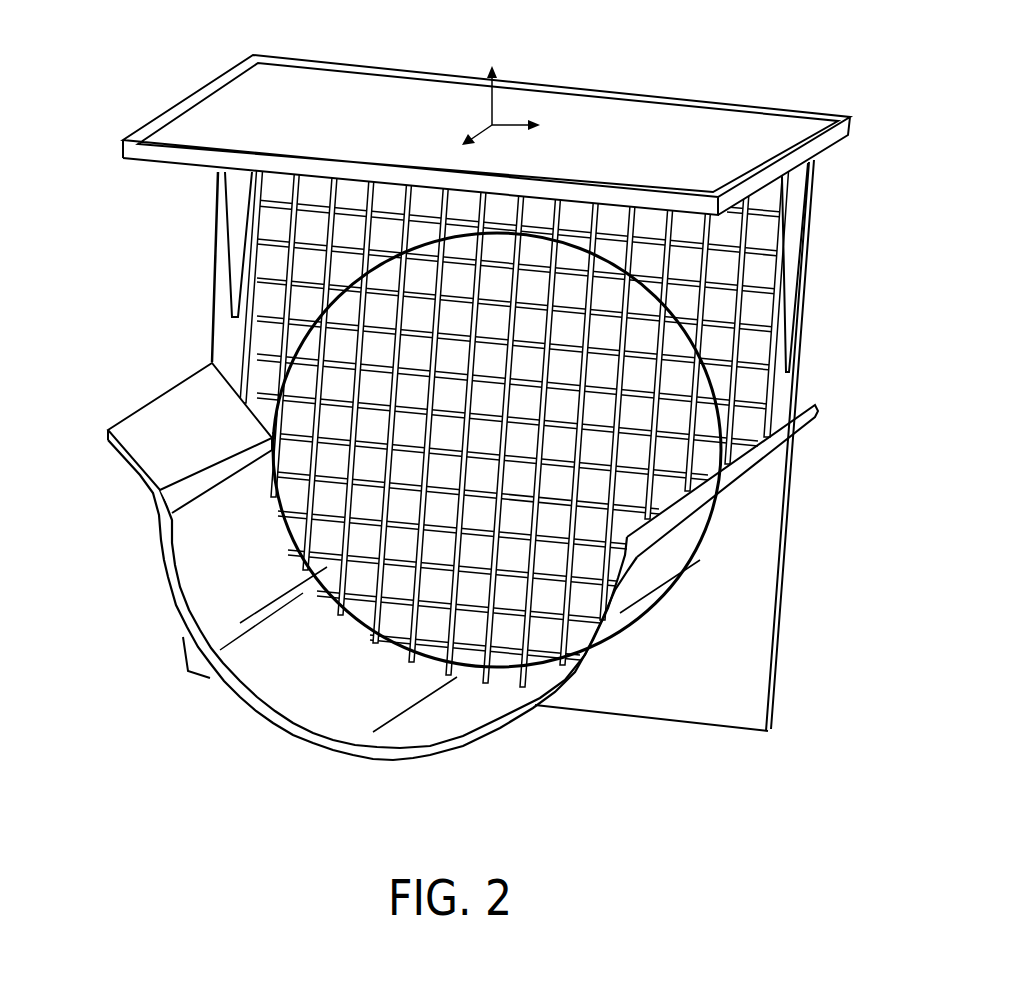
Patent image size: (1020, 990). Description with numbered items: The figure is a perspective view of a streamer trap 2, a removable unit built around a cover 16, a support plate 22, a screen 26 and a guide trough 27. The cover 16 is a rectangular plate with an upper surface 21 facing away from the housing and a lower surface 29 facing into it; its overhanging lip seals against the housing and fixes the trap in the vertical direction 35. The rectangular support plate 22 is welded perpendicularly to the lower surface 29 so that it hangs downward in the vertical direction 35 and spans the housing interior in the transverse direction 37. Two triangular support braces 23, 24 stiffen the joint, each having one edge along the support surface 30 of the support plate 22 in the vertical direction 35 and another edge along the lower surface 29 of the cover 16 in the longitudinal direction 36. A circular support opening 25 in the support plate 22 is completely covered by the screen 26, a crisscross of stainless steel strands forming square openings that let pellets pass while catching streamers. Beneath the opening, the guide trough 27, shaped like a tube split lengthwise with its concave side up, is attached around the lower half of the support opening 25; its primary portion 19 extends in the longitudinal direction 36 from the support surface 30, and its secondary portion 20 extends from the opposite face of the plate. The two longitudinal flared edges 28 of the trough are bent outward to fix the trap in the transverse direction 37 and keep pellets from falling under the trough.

The streamer trap 2 is at (475, 412).
The cover 16 is at (451, 107).
The upper surface 21 is at (451, 107).
The primary portion 19 is at (414, 524).
The guide trough 27 is at (250, 703).
The secondary portion 20 is at (265, 458).
The support plate 22 is at (783, 578).
The support brace 23 is at (798, 233).
The support brace 24 is at (226, 216).
The support opening 25 is at (515, 487).
The screen 26 is at (456, 630).
The flared edges 28 is at (120, 450).
The lower surface 29 is at (130, 160).
The support surface 30 is at (738, 678).
The vertical direction 35 is at (493, 76).
The longitudinal direction 36 is at (457, 147).
The transverse direction 37 is at (533, 128).